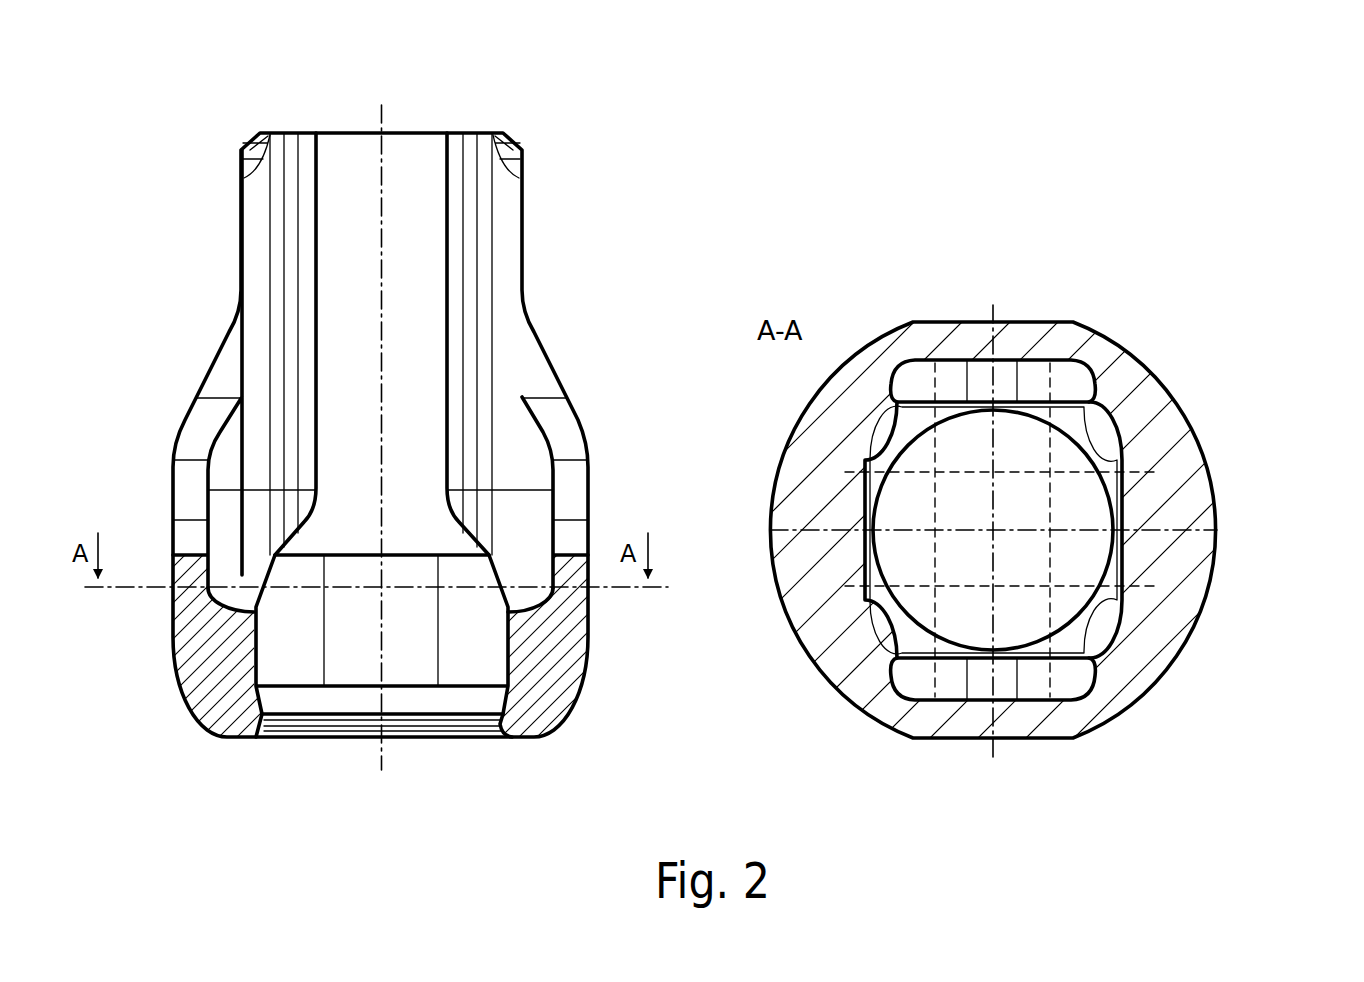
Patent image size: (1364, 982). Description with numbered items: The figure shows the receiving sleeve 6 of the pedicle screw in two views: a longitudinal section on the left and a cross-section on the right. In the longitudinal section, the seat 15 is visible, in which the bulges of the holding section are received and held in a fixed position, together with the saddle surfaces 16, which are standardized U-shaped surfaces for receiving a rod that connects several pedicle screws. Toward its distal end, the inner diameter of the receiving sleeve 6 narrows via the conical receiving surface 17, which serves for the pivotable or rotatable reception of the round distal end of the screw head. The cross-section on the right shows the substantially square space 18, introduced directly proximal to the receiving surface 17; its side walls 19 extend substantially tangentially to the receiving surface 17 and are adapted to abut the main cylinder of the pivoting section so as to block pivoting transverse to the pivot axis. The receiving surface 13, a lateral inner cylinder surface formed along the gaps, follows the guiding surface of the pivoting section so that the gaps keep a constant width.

The receiving sleeve 6 is at (574, 123).
The receiving surface 13 is at (955, 650).
The seat 15 is at (215, 598).
The saddle surfaces 16 is at (238, 612).
The conical receiving surface 17 is at (338, 703).
The square space 18 is at (1100, 442).
The side walls 19 is at (1142, 556).